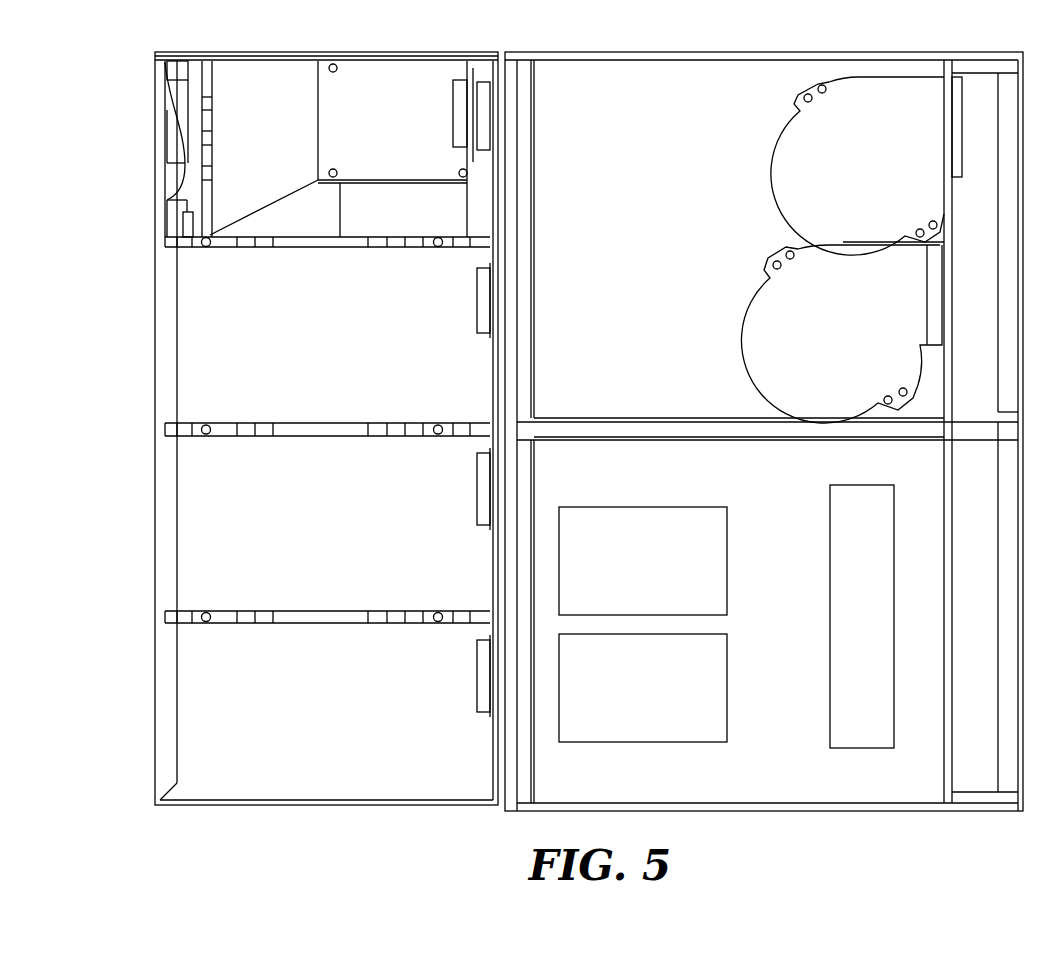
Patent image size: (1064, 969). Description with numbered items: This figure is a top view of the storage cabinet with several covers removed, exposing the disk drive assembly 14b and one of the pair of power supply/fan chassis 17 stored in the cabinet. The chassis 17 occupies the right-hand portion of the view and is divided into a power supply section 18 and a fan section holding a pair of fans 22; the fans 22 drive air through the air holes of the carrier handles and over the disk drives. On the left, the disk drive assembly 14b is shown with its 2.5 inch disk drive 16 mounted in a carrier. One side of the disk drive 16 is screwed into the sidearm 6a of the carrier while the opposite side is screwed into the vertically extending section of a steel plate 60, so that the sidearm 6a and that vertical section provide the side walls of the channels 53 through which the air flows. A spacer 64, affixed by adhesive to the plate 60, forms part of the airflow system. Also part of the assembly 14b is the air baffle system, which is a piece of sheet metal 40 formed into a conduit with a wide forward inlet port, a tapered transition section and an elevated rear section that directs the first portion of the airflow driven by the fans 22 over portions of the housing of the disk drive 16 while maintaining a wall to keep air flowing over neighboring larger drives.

The sidearm 6a is at (390, 52).
The power supply/fan chassis 17 is at (827, 53).
The disk drive assembly 14b is at (133, 160).
The sheet metal 40 is at (249, 134).
The 2.5 inch disk drive 16 is at (375, 134).
The steel plate 60 is at (292, 222).
The spacer 64 is at (388, 222).
The channels 53 is at (332, 181).
The power supply section 18 is at (627, 250).
The fans 22 is at (867, 168).